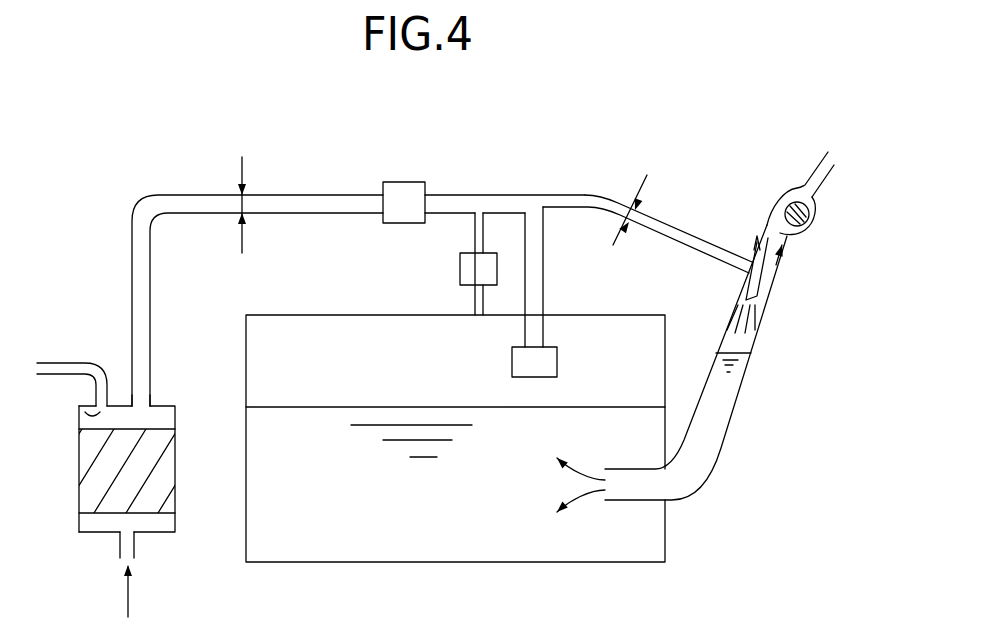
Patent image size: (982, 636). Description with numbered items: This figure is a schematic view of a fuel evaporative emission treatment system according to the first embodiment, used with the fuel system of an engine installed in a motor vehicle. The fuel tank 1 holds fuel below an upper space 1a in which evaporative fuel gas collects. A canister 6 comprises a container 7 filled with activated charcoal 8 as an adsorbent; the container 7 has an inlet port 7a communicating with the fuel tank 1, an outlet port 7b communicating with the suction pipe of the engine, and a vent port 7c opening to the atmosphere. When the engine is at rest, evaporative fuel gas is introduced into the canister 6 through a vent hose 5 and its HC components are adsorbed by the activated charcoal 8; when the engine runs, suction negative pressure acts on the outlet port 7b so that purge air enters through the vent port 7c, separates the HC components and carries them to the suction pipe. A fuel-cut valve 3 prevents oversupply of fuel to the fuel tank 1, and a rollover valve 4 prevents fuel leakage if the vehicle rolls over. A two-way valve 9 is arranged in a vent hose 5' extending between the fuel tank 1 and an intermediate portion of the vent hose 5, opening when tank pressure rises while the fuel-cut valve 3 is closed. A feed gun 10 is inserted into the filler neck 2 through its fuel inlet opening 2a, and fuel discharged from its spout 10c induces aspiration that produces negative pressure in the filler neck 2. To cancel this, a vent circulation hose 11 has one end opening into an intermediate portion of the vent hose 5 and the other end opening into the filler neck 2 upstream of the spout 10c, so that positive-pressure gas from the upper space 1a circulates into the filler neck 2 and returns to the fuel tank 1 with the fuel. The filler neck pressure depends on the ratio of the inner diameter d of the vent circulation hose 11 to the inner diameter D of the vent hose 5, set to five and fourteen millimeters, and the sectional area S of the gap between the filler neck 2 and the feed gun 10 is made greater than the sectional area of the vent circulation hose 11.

The fuel tank 1 is at (674, 533).
The upper space 1a is at (331, 374).
The filler neck 2 is at (740, 405).
The fuel inlet opening 2a is at (782, 245).
The fuel-cut valve 3 is at (513, 360).
The rollover valve 4 is at (410, 182).
The vent hose 5 is at (358, 261).
The vent hose 5' is at (439, 264).
The canister 6 is at (77, 467).
The container 7 is at (79, 497).
The inlet port 7a is at (140, 398).
The outlet port 7b is at (100, 411).
The vent port 7c is at (134, 544).
The activated charcoal 8 is at (110, 505).
The two-way valve 9 is at (460, 272).
The feed gun 10 is at (782, 192).
The spout 10c is at (757, 322).
The vent circulation hose 11 is at (692, 240).
The inner diameter of the vent hose D is at (243, 203).
The inner diameter of the vent circulation hose d is at (629, 221).
The sectional area of the gap S is at (767, 287).